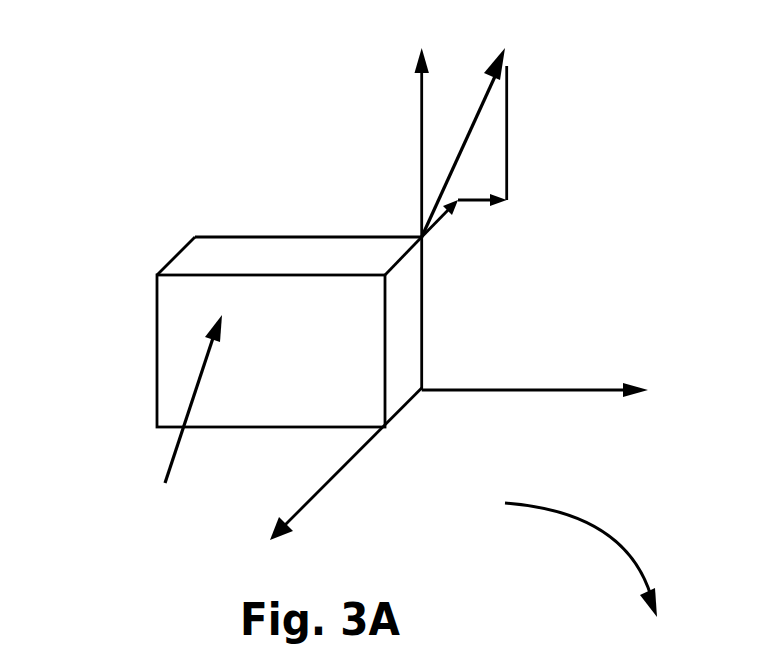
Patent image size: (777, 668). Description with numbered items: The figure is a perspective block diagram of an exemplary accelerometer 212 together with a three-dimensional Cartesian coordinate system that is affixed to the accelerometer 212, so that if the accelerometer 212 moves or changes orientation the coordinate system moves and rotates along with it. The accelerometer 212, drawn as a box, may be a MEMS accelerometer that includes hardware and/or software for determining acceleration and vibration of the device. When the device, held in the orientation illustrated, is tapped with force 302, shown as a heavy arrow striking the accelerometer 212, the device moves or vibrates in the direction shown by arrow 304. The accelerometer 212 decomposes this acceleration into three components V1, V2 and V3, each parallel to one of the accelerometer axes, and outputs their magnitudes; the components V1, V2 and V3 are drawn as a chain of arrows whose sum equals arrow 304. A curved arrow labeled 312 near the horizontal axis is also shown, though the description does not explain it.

The accelerometer 212 is at (195, 237).
The force 302 is at (172, 465).
The arrow 304 is at (472, 125).
The rotation direction 312 is at (581, 585).
The acceleration component V1 is at (438, 227).
The acceleration component V2 is at (478, 202).
The acceleration component V3 is at (508, 160).